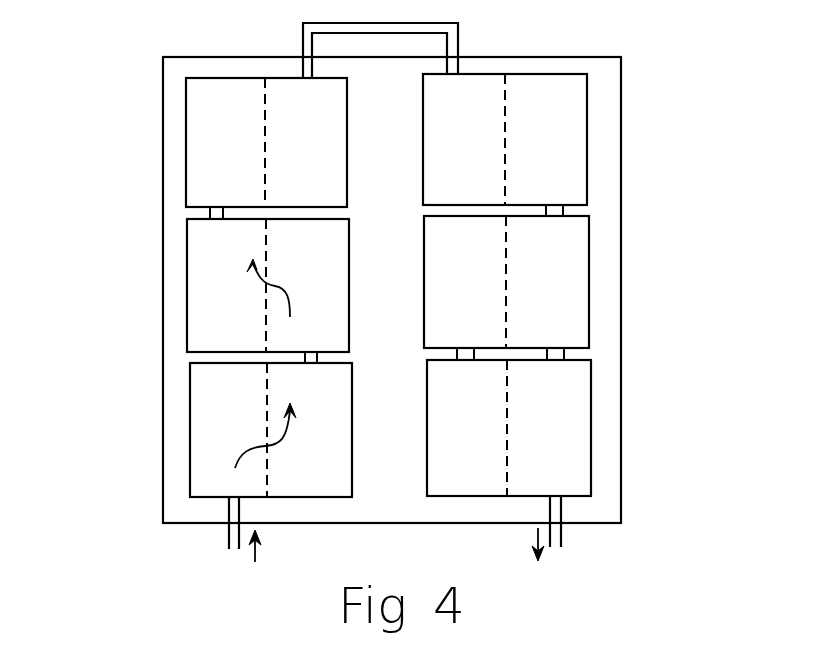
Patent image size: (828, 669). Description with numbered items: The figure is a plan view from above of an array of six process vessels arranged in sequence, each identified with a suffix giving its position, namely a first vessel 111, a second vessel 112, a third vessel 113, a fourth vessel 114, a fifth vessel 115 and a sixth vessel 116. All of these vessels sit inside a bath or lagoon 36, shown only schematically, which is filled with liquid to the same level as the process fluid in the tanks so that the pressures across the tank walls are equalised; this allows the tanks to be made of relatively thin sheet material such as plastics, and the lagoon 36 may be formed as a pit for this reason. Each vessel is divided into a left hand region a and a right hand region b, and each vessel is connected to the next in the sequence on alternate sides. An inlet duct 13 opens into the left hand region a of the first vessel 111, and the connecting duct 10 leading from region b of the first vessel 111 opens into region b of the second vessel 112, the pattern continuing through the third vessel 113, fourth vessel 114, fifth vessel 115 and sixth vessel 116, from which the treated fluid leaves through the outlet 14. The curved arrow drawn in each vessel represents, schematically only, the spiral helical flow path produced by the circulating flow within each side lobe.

The bath or lagoon 36 is at (162, 65).
The first vessel 111 is at (215, 438).
The second vessel 112 is at (200, 288).
The third vessel 113 is at (212, 157).
The fourth vessel 114 is at (560, 150).
The fifth vessel 115 is at (548, 285).
The sixth vessel 116 is at (569, 427).
The connecting passage 10 is at (313, 352).
The inlet duct 13 is at (228, 535).
The outlet 14 is at (562, 533).